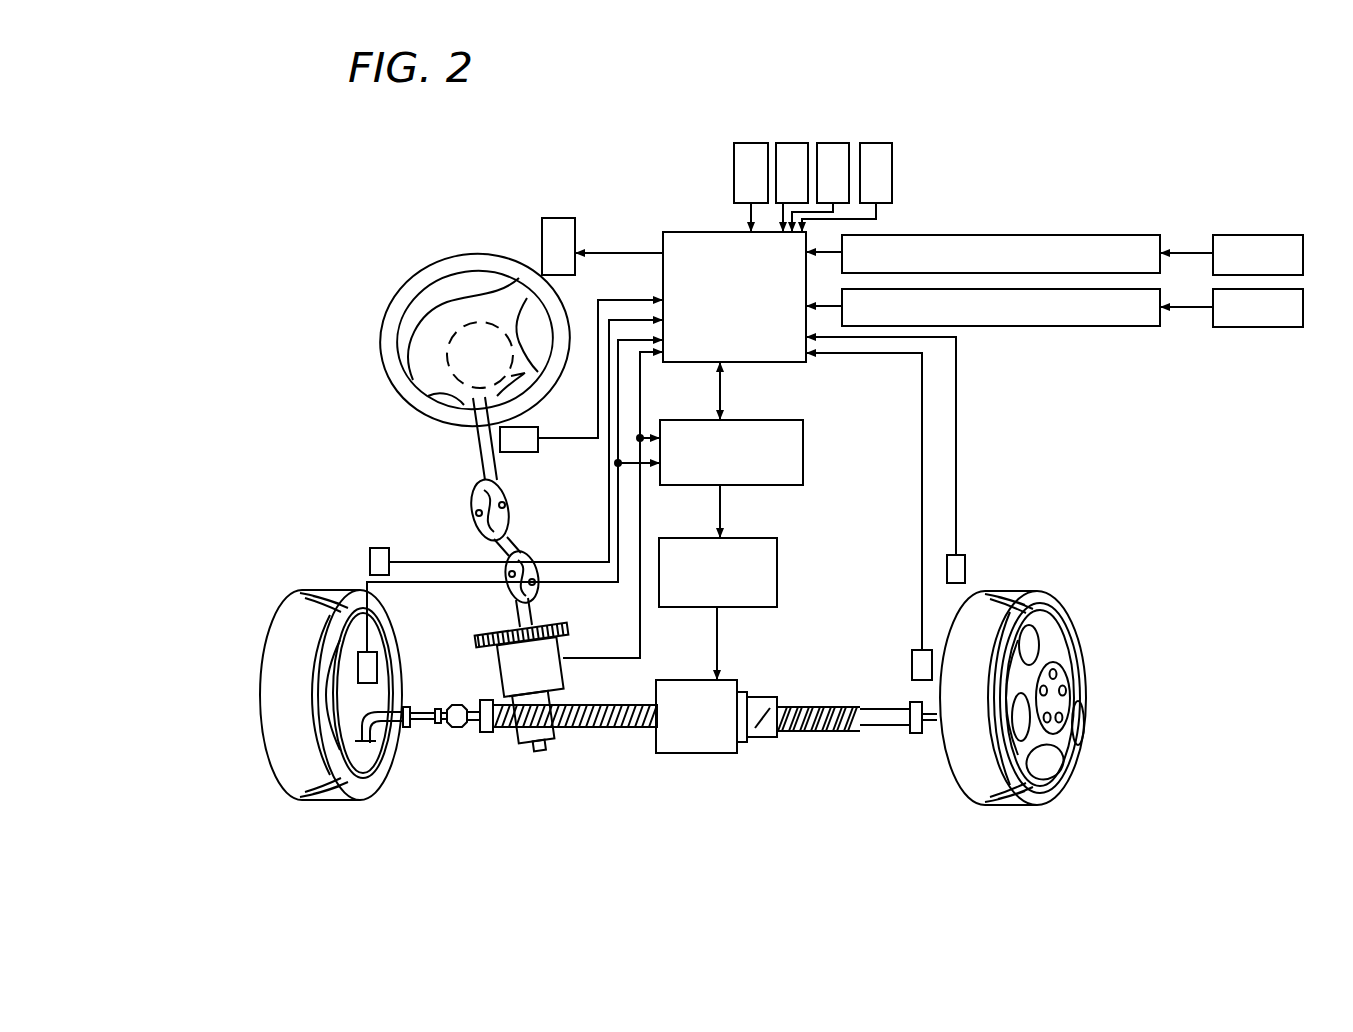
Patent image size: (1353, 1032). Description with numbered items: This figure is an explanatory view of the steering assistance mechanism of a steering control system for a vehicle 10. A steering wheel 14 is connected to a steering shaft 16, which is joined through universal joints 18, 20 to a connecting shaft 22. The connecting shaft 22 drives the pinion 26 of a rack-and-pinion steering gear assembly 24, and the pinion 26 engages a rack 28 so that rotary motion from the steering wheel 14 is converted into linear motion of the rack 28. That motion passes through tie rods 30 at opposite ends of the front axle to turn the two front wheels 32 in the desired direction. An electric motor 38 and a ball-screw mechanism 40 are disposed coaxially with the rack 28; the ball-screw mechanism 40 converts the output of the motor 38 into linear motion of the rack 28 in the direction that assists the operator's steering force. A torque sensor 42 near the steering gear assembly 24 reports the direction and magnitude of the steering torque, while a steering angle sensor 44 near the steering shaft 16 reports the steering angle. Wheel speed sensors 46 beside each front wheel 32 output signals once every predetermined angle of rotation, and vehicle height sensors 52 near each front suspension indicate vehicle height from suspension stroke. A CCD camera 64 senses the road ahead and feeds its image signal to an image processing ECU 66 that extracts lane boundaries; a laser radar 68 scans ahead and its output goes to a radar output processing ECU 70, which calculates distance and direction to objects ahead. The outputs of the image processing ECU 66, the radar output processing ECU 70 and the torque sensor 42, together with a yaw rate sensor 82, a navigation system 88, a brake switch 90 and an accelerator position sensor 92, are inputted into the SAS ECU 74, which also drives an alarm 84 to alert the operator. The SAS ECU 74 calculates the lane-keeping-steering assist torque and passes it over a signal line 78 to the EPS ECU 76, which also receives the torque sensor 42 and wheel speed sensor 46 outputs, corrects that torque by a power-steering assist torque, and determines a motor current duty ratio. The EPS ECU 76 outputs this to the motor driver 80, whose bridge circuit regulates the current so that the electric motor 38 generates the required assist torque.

The vehicle 10 is at (1000, 512).
The steering wheel 14 is at (402, 300).
The steering shaft 16 is at (477, 445).
The universal joint 18 is at (510, 490).
The universal joint 20 is at (492, 570).
The connecting shaft 22 is at (538, 611).
The rack-and-pinion steering gear assembly 24 is at (503, 733).
The pinion 26 is at (528, 750).
The rack 28 is at (562, 707).
The tie rod 30 is at (383, 711).
The front wheel 32 is at (325, 590).
The electric motor 38 is at (705, 748).
The ball-screw mechanism 40 is at (828, 696).
The torque sensor 42 is at (565, 647).
The steering angle sensor 44 is at (520, 427).
The wheel speed sensor 46 is at (358, 655).
The vehicle height sensor 52 is at (375, 548).
The CCD camera 64 is at (1245, 235).
The image processing ECU 66 is at (1003, 235).
The laser radar 68 is at (1243, 327).
The radar output processing ECU 70 is at (1022, 326).
The SAS ECU 74 is at (775, 365).
The EPS ECU 76 is at (805, 455).
The signal line 78 is at (720, 380).
The motor driver 80 is at (777, 573).
The yaw rate sensor 82 is at (748, 143).
The alarm 84 is at (553, 218).
The navigation system 88 is at (796, 143).
The brake switch 90 is at (836, 143).
The accelerator position sensor 92 is at (878, 143).